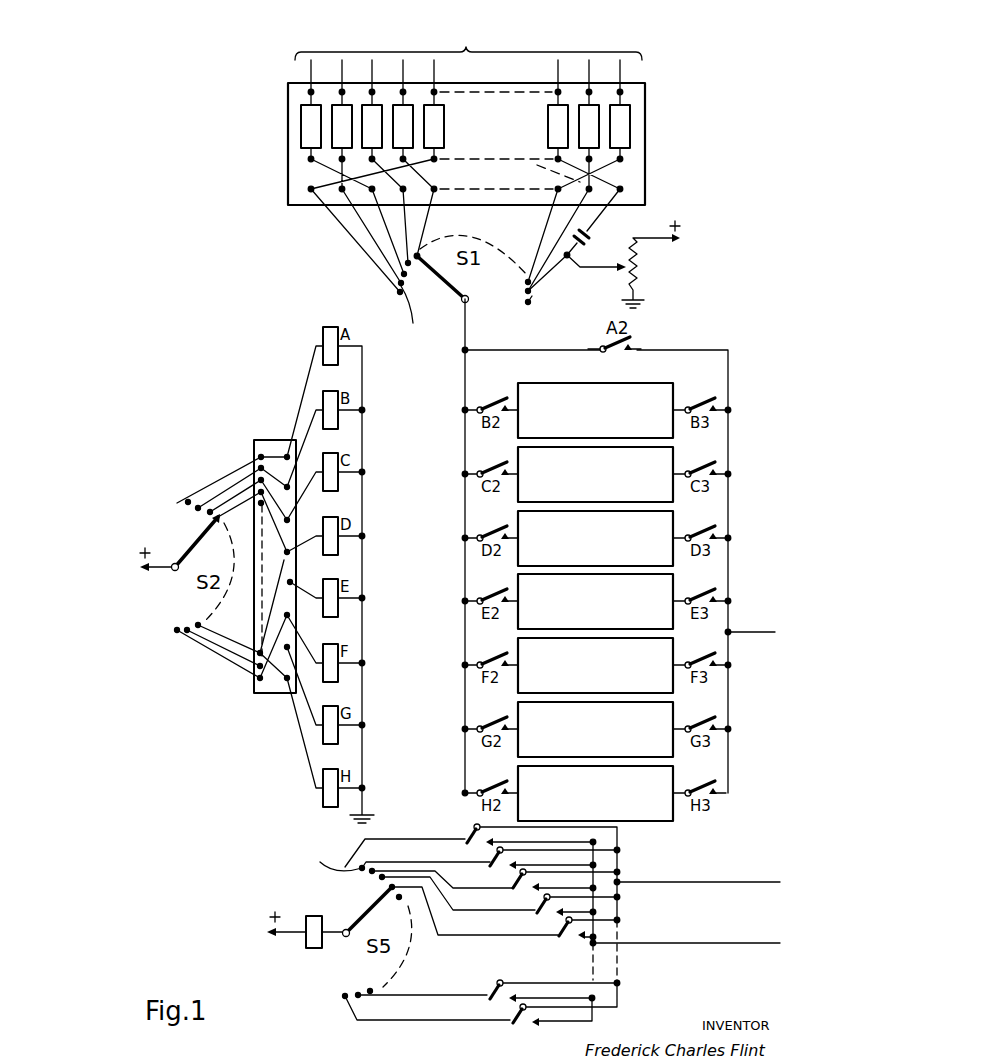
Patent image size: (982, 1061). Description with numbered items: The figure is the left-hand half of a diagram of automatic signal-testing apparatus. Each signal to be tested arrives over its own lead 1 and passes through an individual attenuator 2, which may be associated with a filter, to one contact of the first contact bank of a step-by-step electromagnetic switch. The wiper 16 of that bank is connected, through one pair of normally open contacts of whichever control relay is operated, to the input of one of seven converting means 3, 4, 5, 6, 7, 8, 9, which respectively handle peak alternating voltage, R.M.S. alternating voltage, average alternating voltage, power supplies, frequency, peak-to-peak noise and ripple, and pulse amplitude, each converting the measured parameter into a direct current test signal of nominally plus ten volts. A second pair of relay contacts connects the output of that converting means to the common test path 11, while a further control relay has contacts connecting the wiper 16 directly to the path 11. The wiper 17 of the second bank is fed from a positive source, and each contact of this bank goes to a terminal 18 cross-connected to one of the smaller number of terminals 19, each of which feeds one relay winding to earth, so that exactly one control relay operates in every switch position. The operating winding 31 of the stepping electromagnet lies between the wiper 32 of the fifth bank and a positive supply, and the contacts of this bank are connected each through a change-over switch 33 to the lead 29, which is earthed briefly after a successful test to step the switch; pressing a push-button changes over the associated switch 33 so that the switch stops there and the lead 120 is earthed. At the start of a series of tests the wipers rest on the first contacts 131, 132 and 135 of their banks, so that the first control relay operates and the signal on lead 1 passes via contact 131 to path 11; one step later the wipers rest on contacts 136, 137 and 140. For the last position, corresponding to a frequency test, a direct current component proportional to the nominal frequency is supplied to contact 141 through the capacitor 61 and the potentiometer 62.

The lead 1 is at (436, 77).
The attenuator 2 is at (440, 136).
The peak alternating voltage converting means 3 is at (523, 383).
The R.M.S. alternating voltage converting means 4 is at (518, 447).
The average alternating voltage converting means 5 is at (518, 511).
The power supplies converting means 6 is at (518, 574).
The frequency converting means 7 is at (518, 638).
The noise and ripple converting means 8 is at (518, 702).
The pulse amplitude converting means 9 is at (518, 766).
The test path 11 is at (757, 632).
The wiper of switch bank S1 16 is at (440, 279).
The wiper of switch bank S2 17 is at (199, 539).
The terminal 18 is at (261, 506).
The terminal 19 is at (289, 521).
The lead 29 is at (697, 865).
The operating winding 31 is at (307, 916).
The wiper of contact bank S5 32 is at (367, 911).
The change-over switch 33 is at (473, 828).
The capacitor 61 is at (593, 222).
The potentiometer 62 is at (623, 264).
The lead 120 is at (685, 960).
The first contact of bank S1 131 is at (398, 294).
The first contact of bank S2 132 is at (178, 500).
The first contact of bank S5 135 is at (345, 865).
The second contact of bank S1 136 is at (415, 319).
The second contact of bank S2 137 is at (185, 504).
The second contact of bank S5 140 is at (324, 859).
The contact of bank S1 141 is at (534, 318).